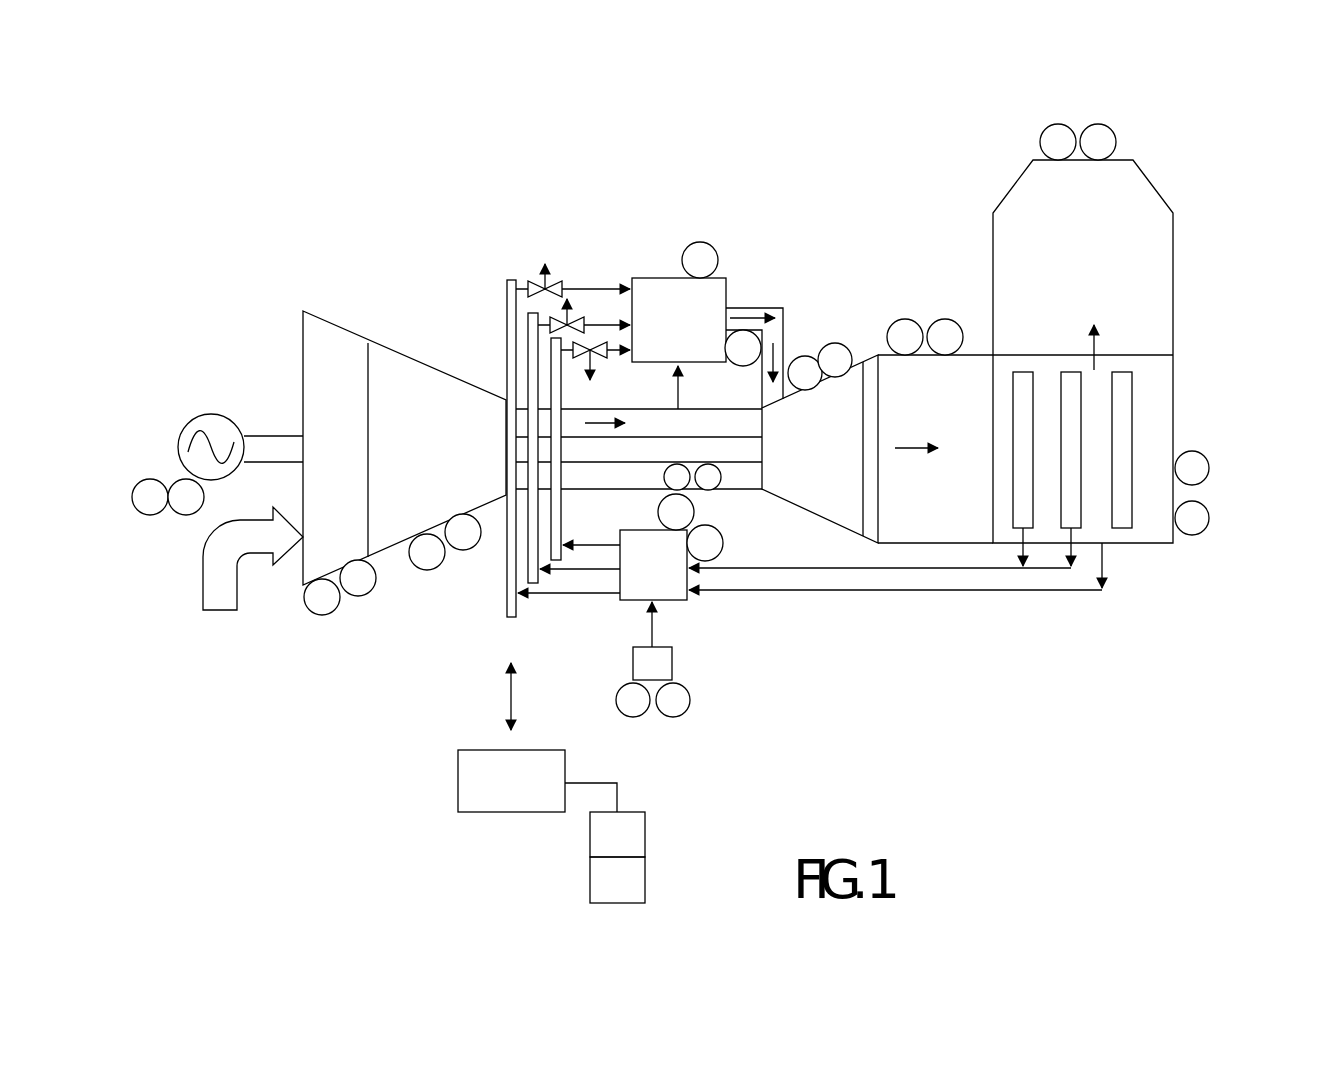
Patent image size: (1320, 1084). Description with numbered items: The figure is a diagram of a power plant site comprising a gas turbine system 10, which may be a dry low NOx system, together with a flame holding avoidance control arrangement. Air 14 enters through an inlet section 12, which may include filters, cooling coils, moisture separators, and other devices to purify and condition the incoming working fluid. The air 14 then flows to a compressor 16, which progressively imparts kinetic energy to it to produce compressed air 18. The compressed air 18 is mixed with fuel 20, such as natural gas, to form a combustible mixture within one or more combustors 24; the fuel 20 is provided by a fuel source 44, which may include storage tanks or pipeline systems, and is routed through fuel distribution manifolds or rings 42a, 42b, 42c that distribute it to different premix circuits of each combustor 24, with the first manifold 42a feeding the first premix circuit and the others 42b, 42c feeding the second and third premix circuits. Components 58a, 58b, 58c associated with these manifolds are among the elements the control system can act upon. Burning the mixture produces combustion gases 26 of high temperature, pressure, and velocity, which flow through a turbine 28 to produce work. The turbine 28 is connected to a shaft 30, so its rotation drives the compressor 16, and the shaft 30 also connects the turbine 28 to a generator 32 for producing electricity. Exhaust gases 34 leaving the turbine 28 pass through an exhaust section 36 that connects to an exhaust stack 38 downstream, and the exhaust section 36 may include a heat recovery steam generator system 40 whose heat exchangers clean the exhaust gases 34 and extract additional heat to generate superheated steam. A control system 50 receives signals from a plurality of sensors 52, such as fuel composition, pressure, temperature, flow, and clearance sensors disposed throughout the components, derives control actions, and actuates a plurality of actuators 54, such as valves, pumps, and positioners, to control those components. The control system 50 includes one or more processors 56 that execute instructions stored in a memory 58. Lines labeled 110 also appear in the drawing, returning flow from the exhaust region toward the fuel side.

The gas turbine system 10 is at (830, 170).
The inlet section 12 is at (404, 448).
The air 14 is at (210, 605).
The compressor 16 is at (401, 450).
The compressed air 18 is at (677, 392).
The fuel 20 is at (655, 640).
The combustor 24 is at (679, 320).
The combustion gases 26 is at (783, 352).
The turbine 28 is at (820, 449).
The shaft 30 is at (598, 463).
The generator 32 is at (207, 414).
The exhaust gases 34 is at (915, 452).
The exhaust section 36 is at (968, 298).
The exhaust stack 38 is at (1173, 292).
The heat recovery steam generator system 40 is at (1156, 426).
The fuel distribution manifold 42a is at (565, 555).
The fuel distribution manifold 42b is at (540, 580).
The fuel distribution manifold 42c is at (511, 620).
The fuel source 44 is at (652, 641).
The control system 50 is at (537, 781).
The sensors 52 is at (694, 444).
The actuators 54 is at (719, 444).
The processor 56 is at (645, 836).
The memory 58 is at (645, 882).
The valve 58a is at (541, 280).
The valve 58b is at (568, 318).
The valve 58c is at (598, 360).
The steam/exhaust line 110 is at (885, 568).